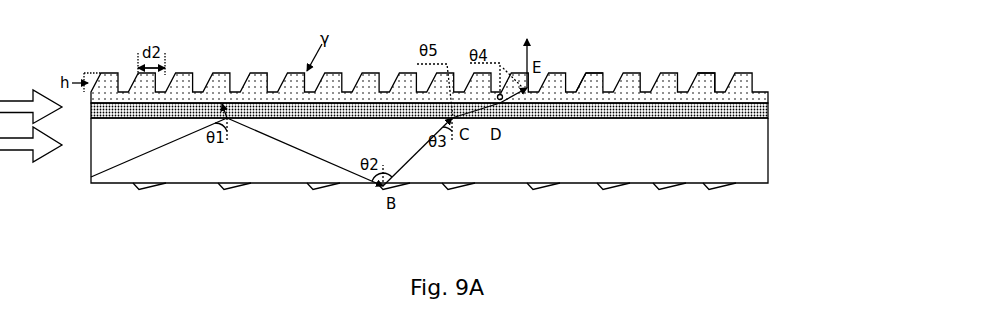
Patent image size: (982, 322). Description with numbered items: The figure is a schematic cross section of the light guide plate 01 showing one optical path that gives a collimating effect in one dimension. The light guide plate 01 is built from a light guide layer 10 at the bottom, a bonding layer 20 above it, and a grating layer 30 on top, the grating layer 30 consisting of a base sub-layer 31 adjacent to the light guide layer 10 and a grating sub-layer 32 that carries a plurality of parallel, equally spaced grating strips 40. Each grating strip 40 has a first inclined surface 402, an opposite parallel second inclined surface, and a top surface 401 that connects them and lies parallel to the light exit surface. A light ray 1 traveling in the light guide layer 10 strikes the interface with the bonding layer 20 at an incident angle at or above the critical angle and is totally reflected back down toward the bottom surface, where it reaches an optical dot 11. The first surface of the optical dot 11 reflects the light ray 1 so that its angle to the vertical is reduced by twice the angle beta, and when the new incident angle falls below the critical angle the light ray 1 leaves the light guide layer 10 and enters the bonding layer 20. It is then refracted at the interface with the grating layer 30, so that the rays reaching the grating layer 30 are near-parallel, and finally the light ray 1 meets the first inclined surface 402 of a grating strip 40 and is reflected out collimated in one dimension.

The light guide plate 01 is at (496, 146).
The light guide layer 10 is at (471, 170).
The optical dot 11 is at (715, 185).
The bonding layer 20 is at (768, 111).
The grating layer 30 is at (471, 94).
The base sub-layer 31 is at (768, 99).
The grating sub-layer 32 is at (753, 80).
The grating strip 40 is at (707, 71).
The top surface 401 is at (587, 74).
The first inclined surface 402 is at (598, 74).
The light ray 1 is at (529, 50).